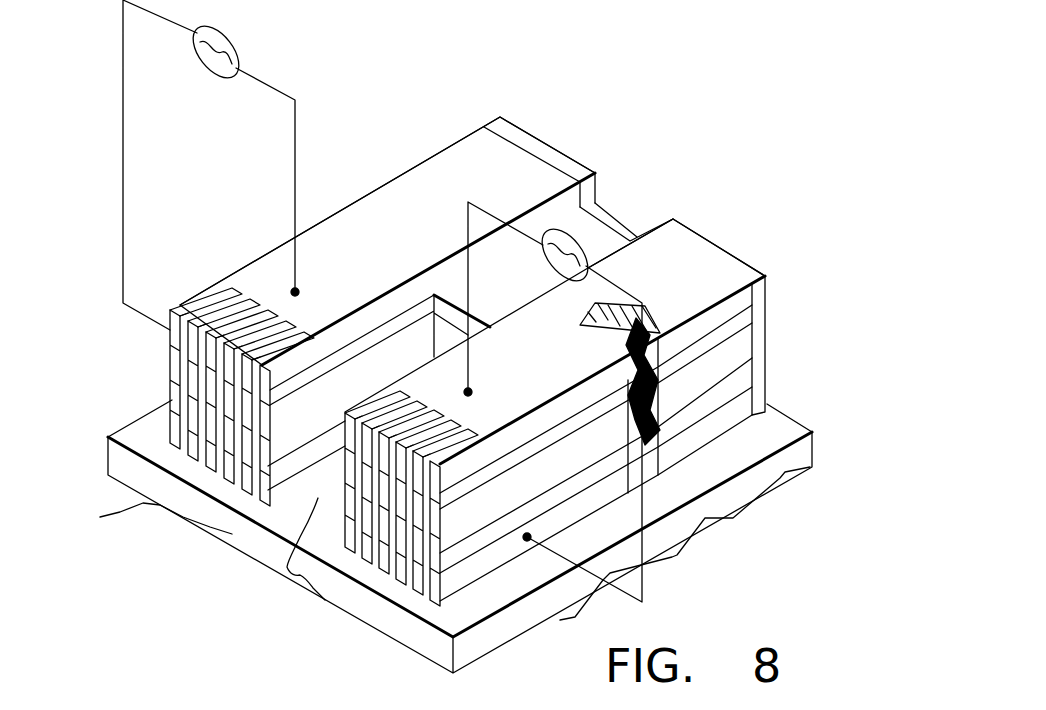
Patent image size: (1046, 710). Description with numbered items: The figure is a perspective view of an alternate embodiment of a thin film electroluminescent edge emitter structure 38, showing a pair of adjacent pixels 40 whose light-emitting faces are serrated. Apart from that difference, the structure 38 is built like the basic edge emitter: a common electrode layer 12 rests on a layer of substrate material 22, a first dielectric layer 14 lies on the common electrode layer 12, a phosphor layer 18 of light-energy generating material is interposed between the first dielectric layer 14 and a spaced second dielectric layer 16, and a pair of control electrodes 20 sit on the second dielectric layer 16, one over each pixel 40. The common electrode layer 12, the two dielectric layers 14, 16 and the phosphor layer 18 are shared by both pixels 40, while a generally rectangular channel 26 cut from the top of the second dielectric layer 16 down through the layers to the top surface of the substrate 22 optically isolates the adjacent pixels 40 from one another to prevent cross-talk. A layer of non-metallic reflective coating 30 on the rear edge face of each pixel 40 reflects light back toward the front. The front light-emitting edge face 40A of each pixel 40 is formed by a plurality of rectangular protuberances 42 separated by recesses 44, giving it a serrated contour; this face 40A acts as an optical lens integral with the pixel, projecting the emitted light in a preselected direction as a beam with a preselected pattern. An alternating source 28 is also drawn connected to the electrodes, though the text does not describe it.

The common electrode layer 12 is at (722, 421).
The first dielectric layer 14 is at (743, 387).
The second dielectric layer 16 is at (743, 323).
The phosphor layer 18 is at (740, 358).
The control electrodes 20 is at (565, 203).
The substrate material layer 22 is at (742, 493).
The channel 26 is at (283, 575).
The AC voltage source 28 is at (236, 34).
The reflective coating 30 is at (623, 217).
The TFEL edge emitter structure 38 is at (723, 134).
The pixel 40 is at (516, 177).
The light-emitting edge face 40A is at (238, 489).
The rectangular protuberances 42 is at (243, 491).
The recesses 44 is at (225, 315).